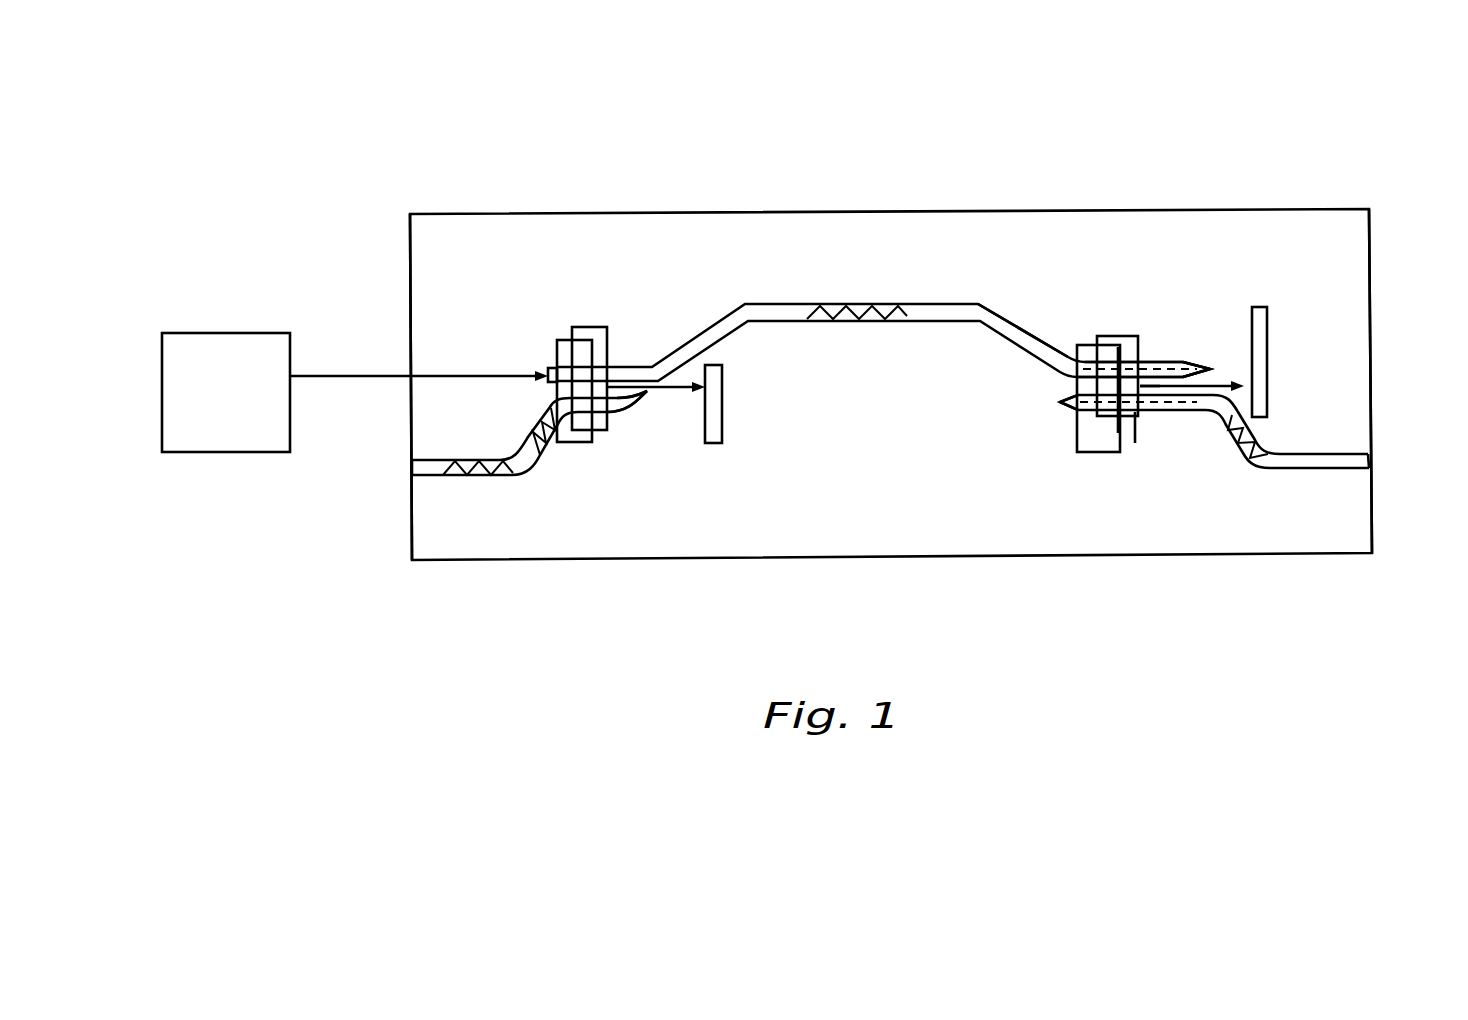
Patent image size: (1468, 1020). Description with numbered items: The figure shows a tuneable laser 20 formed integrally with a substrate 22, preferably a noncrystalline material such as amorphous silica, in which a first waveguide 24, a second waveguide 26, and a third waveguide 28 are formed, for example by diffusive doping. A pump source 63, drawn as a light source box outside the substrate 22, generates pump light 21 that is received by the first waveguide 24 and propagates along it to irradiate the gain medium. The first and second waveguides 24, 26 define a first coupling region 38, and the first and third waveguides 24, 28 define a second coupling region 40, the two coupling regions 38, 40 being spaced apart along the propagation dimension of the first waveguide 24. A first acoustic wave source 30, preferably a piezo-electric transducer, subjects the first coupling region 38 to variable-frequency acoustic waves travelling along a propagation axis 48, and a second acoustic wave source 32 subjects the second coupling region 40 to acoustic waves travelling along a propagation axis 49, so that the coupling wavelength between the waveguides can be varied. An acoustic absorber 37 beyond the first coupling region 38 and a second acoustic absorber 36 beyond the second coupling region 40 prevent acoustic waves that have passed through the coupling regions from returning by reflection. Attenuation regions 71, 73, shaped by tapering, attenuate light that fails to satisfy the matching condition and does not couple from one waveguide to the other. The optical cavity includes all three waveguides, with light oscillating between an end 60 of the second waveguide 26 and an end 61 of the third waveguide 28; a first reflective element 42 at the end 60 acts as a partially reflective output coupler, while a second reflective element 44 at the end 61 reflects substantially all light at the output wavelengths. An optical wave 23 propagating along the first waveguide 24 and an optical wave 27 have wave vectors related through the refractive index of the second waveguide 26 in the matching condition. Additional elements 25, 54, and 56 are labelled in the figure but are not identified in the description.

The laser 20 is at (1254, 140).
The pump light 21 is at (350, 376).
The substrate 22 is at (1330, 217).
The optical wave 23 is at (880, 305).
The first waveguide 24 is at (977, 303).
The input waveguide segment 25 is at (462, 477).
The second waveguide 26 is at (1315, 457).
The optical wave 27 is at (1280, 470).
The third waveguide 28 is at (470, 460).
The first acoustic wave source 30 is at (1112, 336).
The second acoustic wave source 32 is at (586, 327).
The second acoustic absorber 36 is at (717, 444).
The acoustic absorber 37 is at (1260, 307).
The first coupling region 38 is at (1143, 387).
The second coupling region 40 is at (655, 399).
The first reflective element 42 is at (1370, 460).
The second reflective element 44 is at (412, 467).
The propagation axis 48 is at (1220, 382).
The propagation axis 49 is at (687, 378).
The upper waveguide branch 54 is at (1147, 367).
The lower waveguide branch 56 is at (1133, 417).
The end 60 is at (1370, 443).
The end 61 is at (412, 440).
The pump source 63 is at (232, 333).
The attenuation region 71 is at (1210, 367).
The attenuation region 73 is at (1062, 402).